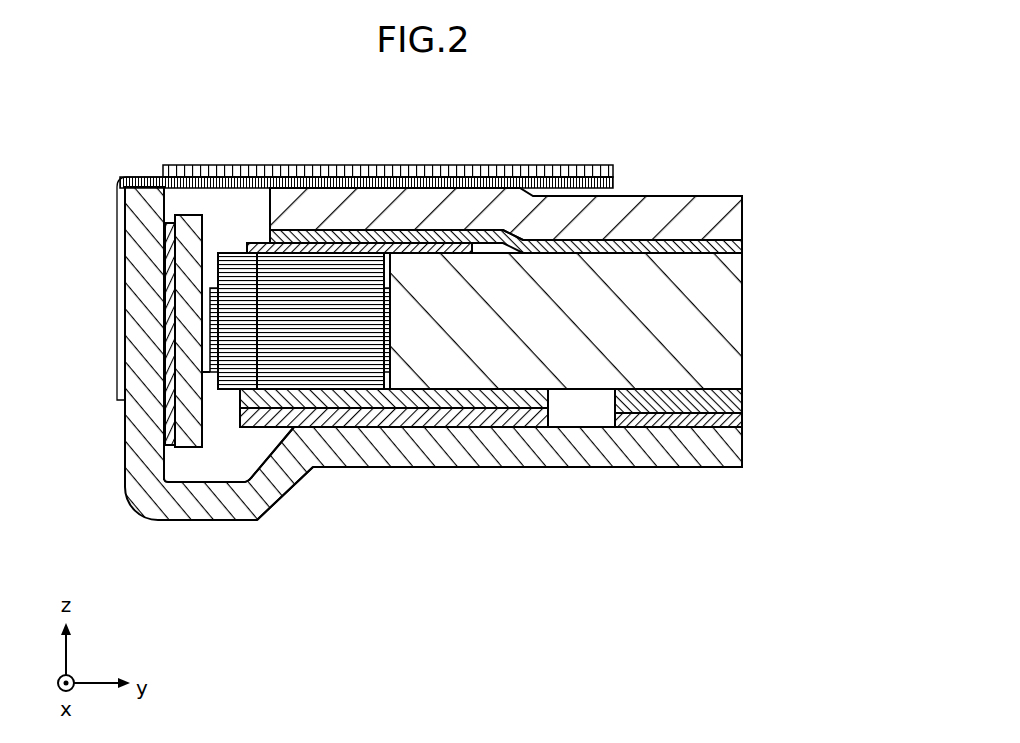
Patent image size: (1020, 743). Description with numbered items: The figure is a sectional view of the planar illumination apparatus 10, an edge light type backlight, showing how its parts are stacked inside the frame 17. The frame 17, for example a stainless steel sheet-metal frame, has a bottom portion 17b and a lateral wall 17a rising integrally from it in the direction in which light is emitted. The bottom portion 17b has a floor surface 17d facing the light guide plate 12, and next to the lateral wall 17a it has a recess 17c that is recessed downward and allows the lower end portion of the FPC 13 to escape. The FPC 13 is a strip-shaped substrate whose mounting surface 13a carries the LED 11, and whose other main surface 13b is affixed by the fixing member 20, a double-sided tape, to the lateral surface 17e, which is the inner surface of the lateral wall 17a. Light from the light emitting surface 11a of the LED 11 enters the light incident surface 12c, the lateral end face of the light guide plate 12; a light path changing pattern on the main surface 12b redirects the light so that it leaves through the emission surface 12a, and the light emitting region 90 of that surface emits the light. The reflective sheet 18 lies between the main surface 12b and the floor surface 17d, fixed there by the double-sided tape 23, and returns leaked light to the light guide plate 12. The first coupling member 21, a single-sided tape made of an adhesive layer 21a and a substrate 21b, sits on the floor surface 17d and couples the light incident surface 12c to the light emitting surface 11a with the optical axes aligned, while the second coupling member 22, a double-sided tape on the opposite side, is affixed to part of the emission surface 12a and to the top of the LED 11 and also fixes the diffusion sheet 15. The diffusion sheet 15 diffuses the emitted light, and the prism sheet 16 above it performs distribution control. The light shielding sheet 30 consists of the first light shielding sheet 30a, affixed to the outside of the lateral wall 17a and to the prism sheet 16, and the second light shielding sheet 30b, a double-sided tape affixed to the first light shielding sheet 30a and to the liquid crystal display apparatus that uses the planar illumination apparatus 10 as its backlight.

The planar illumination apparatus 10 is at (584, 134).
The light emitting region 90 is at (720, 175).
The LED 11 is at (313, 413).
The light emitting surface 11a is at (393, 360).
The light guide plate 12 is at (599, 321).
The emission surface 12a is at (742, 260).
The main surface 12b is at (718, 389).
The light incident surface 12c is at (395, 299).
The FPC 13 is at (139, 394).
The mounting surface 13a is at (204, 415).
The main surface 13b is at (180, 425).
The diffusion sheet 15 is at (742, 246).
The prism sheet 16 is at (742, 215).
The frame 17 is at (147, 198).
The lateral wall 17a is at (135, 438).
The bottom portion 17b is at (445, 457).
The recess 17c is at (287, 513).
The floor surface 17d is at (575, 419).
The lateral surface 17e is at (176, 477).
The reflective sheet 18 is at (742, 397).
The fixing member 20 is at (168, 458).
The first coupling member 21 is at (400, 481).
The adhesive layer 21a is at (533, 398).
The substrate 21b is at (498, 417).
The second coupling member 22 is at (256, 243).
The double-sided tape 23 is at (742, 421).
The light shielding sheet 30 is at (366, 127).
The first light shielding sheet 30a is at (318, 185).
The second light shielding sheet 30b is at (295, 113).